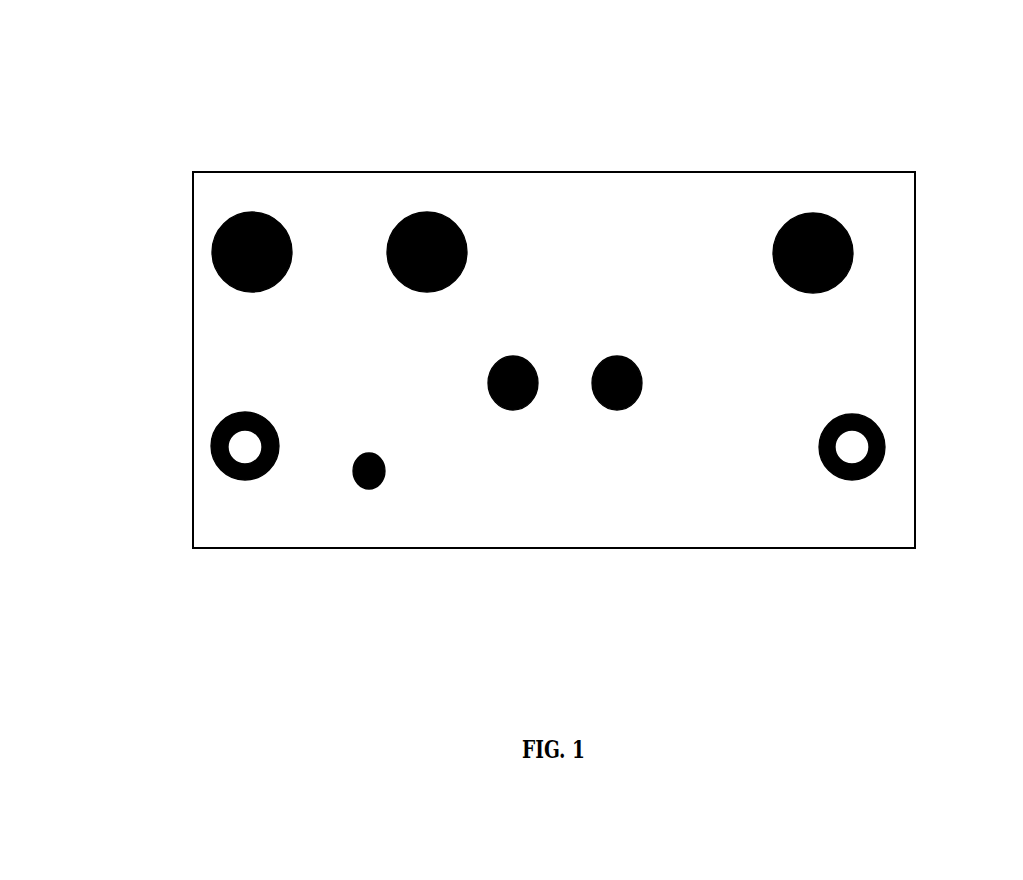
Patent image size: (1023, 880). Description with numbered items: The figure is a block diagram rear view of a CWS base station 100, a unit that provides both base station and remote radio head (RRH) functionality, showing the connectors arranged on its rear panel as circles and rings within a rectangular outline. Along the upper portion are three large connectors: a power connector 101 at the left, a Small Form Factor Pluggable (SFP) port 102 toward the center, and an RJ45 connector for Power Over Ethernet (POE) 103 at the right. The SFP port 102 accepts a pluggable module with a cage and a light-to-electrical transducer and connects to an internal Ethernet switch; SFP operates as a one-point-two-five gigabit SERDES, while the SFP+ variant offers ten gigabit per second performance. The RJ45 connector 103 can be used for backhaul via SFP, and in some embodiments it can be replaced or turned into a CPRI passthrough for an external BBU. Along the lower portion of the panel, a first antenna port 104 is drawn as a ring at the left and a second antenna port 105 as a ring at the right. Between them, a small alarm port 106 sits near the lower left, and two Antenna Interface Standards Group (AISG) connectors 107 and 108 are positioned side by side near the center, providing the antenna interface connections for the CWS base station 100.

The CWS base station 100 is at (186, 132).
The power connector 101 is at (217, 236).
The Small Form Factor Pluggable (SFP) port 102 is at (398, 223).
The RJ45 connector for Power Over Ethernet (POE) 103 is at (843, 223).
The first antenna port 104 is at (215, 433).
The second antenna port 105 is at (877, 423).
The alarm port 106 is at (378, 486).
The Antenna Interface Standards Group (AISG) connector 107 is at (521, 407).
The Antenna Interface Standards Group (AISG) connector 108 is at (617, 408).